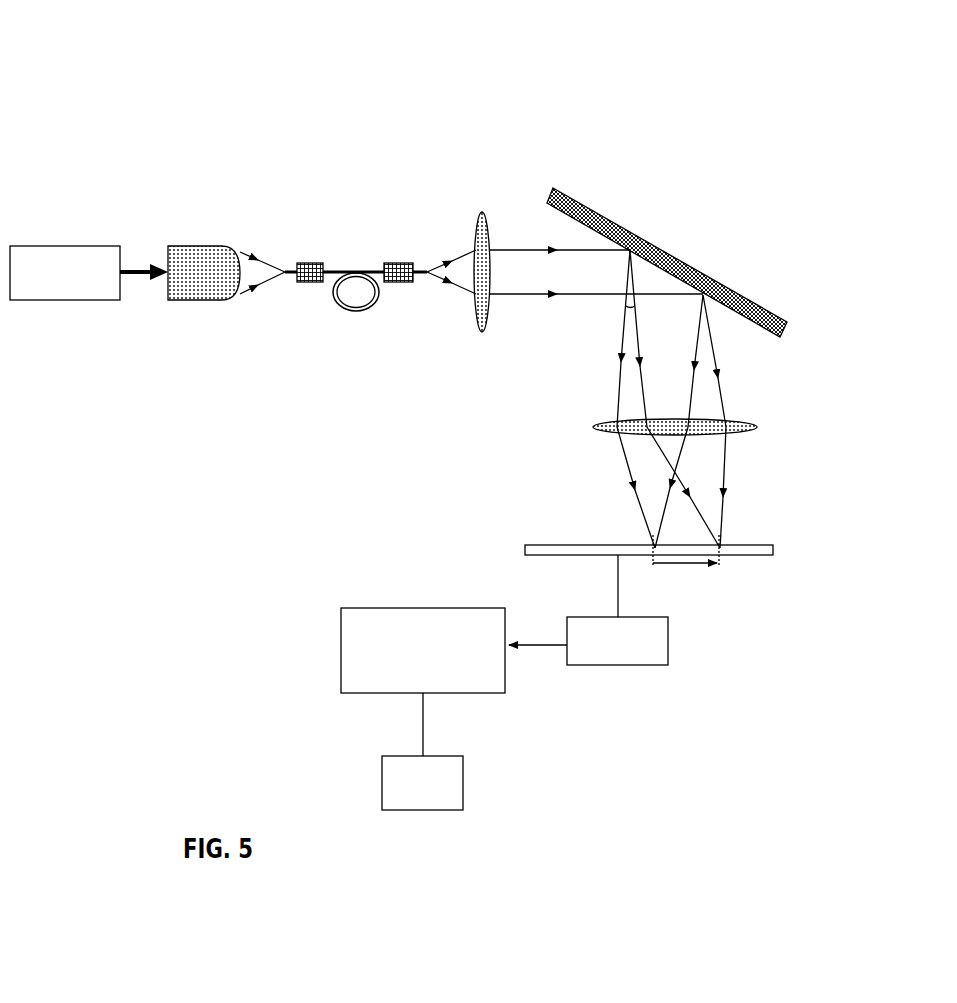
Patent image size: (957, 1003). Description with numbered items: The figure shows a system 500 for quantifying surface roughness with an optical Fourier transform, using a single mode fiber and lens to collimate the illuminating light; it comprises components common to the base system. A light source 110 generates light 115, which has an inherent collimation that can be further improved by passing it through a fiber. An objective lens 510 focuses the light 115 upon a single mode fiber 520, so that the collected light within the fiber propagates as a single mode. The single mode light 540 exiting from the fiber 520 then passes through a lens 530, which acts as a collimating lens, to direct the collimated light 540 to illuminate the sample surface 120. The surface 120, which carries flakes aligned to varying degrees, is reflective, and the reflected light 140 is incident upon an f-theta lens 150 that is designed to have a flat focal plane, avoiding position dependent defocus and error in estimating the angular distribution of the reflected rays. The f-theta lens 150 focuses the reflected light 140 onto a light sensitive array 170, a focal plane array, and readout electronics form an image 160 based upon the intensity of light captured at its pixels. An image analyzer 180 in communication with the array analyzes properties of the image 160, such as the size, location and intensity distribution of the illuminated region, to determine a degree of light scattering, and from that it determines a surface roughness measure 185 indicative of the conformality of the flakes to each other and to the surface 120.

The system 500 is at (112, 38).
The light source 110 is at (65, 273).
The light 115 is at (143, 263).
The objective lens 510 is at (218, 246).
The single mode fiber 520 is at (352, 311).
The lens 530 is at (487, 232).
The single mode light 540 is at (512, 296).
The surface 120 is at (598, 213).
The reflected light 140 is at (617, 388).
The f-theta lens 150 is at (745, 432).
The light sensitive array 170 is at (548, 545).
The image 160 is at (625, 665).
The image analyzer 180 is at (423, 650).
The surface roughness measure 185 is at (422, 751).